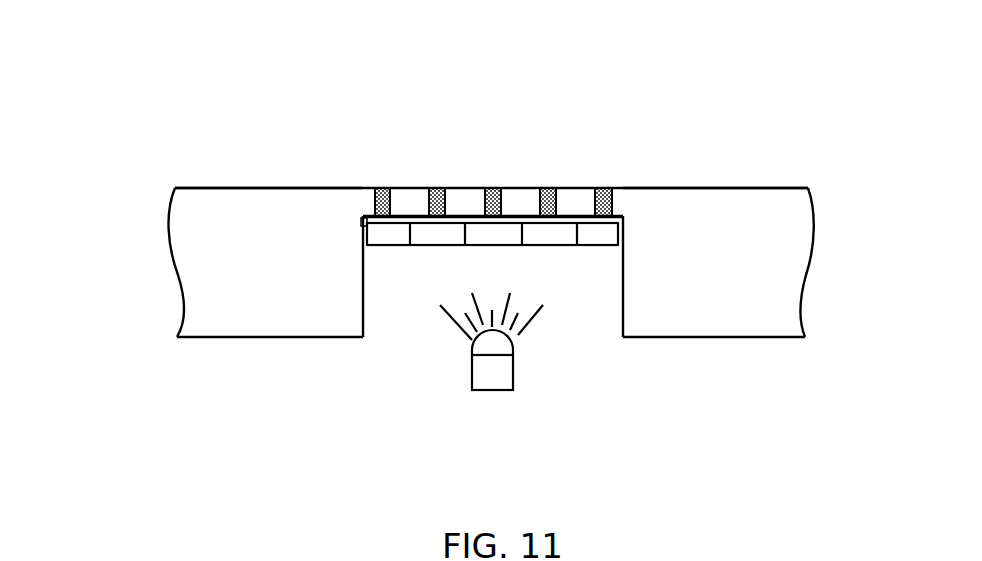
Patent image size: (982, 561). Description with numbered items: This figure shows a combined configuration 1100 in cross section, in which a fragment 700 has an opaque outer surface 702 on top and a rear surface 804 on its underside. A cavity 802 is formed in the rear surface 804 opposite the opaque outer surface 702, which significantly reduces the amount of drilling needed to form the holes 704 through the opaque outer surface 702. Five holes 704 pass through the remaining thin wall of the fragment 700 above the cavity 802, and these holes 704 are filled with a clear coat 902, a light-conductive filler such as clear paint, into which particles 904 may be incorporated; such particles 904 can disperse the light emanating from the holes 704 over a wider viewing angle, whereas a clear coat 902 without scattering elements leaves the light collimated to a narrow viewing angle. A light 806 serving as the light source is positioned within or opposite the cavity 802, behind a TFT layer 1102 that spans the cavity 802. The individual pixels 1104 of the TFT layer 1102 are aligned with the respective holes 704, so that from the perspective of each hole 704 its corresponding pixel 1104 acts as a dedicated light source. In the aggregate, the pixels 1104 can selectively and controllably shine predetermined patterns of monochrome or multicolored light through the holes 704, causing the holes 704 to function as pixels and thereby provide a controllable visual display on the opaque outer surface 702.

The combined configuration 1100 is at (205, 72).
The fragment 700 is at (171, 233).
The opaque outer surface 702 is at (303, 187).
The rear surface 804 is at (232, 337).
The holes 704 is at (386, 188).
The clear coat 902 is at (440, 188).
The particles 904 is at (553, 188).
The cavity 802 is at (383, 298).
The TFT layer 1102 is at (432, 248).
The individual pixels 1104 is at (507, 233).
The light 806 is at (493, 347).